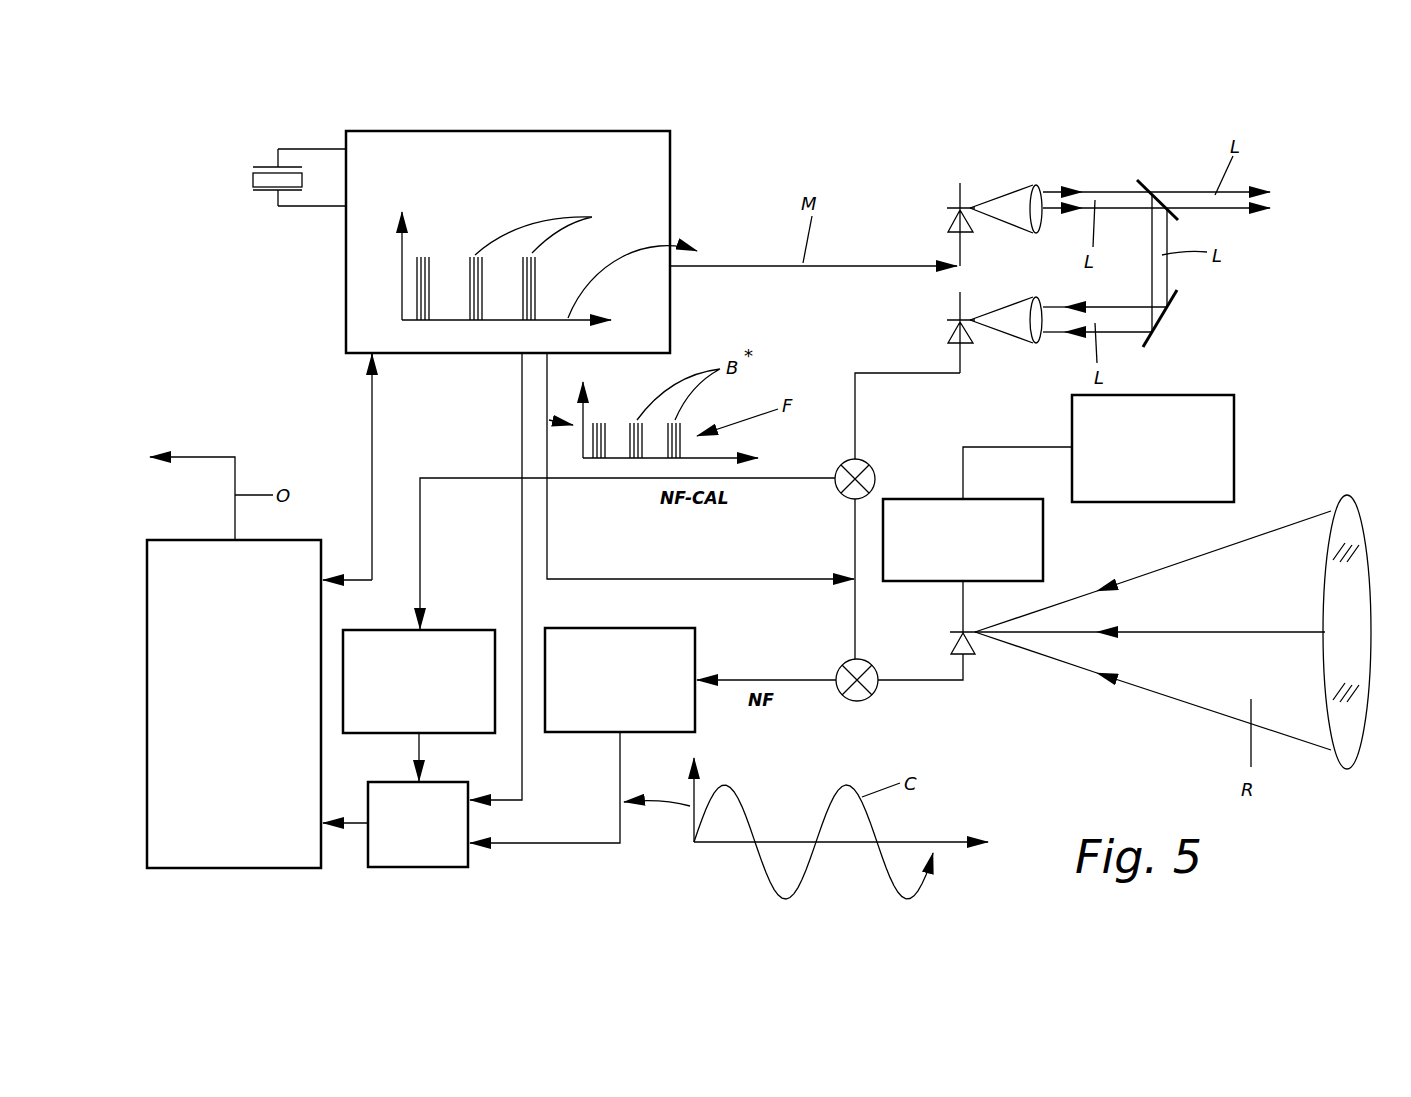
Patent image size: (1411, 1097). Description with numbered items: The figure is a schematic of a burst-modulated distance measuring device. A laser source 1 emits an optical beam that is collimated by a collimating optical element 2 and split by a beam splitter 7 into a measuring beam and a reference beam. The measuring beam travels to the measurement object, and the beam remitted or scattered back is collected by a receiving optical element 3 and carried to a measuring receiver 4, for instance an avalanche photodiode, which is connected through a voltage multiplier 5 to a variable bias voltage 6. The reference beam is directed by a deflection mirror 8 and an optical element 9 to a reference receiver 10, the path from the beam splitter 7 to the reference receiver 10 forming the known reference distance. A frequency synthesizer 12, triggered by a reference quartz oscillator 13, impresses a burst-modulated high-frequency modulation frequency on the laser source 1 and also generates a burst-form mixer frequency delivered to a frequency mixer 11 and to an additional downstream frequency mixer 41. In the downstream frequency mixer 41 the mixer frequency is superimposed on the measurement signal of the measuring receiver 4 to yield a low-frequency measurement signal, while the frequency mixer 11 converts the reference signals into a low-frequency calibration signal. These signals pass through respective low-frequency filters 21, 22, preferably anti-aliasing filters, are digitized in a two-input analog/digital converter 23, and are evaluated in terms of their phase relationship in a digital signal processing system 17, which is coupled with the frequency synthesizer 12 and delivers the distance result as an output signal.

The laser source 1 is at (957, 207).
The collimating optical element 2 is at (1038, 183).
The receiving optical element 3 is at (1349, 497).
The measuring receiver 4 is at (975, 636).
The voltage multiplier 5 is at (1044, 541).
The variable bias voltage 6 is at (1236, 444).
The beam splitter 7 is at (1148, 178).
The deflection mirror 8 is at (1165, 320).
The optical element 9 is at (1037, 344).
The reference receiver 10 is at (957, 318).
The frequency mixer 11 is at (869, 465).
The frequency synthesizer 12 is at (507, 130).
The reference quartz oscillator 13 is at (263, 166).
The digital signal processing system 17 is at (228, 870).
The low-frequency filter 21 is at (578, 733).
The low-frequency filter 22 is at (452, 630).
The analog/digital converter 23 is at (418, 868).
The additional downstream frequency mixer 41 is at (873, 696).